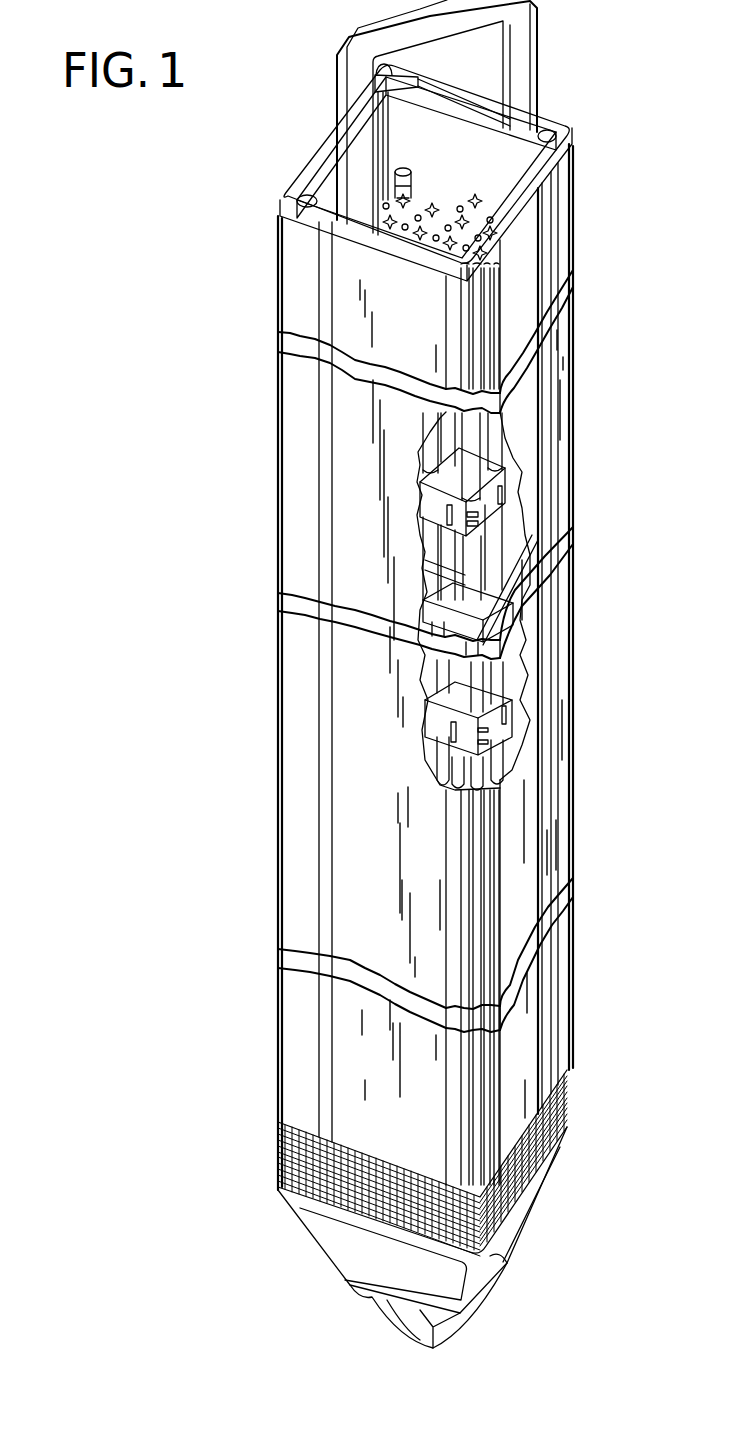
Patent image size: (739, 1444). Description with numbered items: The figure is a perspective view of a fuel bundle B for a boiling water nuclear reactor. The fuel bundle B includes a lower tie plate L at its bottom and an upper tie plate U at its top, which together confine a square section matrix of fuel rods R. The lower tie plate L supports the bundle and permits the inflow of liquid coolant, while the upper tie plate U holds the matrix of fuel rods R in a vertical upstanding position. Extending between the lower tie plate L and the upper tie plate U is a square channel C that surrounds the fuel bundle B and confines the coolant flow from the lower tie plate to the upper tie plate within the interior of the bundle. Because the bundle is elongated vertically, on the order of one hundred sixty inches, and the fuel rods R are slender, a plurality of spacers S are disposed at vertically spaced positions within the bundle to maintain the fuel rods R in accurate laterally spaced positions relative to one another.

The fuel bundle B is at (582, 797).
The upper tie plate U is at (428, 195).
The channel C is at (247, 338).
The fuel rods R is at (517, 632).
The spacers S is at (500, 497).
The lower tie plate L is at (537, 1219).